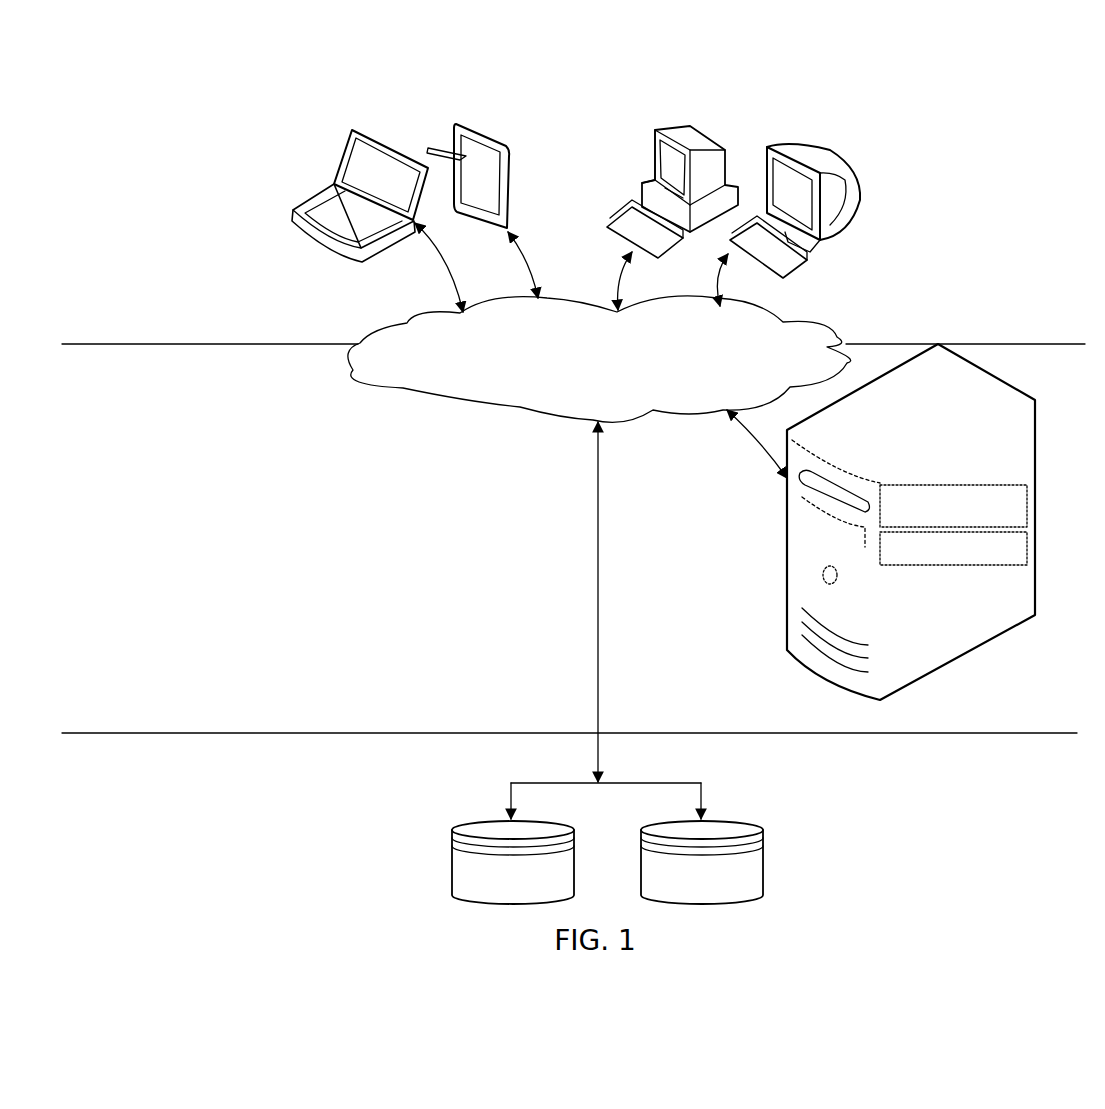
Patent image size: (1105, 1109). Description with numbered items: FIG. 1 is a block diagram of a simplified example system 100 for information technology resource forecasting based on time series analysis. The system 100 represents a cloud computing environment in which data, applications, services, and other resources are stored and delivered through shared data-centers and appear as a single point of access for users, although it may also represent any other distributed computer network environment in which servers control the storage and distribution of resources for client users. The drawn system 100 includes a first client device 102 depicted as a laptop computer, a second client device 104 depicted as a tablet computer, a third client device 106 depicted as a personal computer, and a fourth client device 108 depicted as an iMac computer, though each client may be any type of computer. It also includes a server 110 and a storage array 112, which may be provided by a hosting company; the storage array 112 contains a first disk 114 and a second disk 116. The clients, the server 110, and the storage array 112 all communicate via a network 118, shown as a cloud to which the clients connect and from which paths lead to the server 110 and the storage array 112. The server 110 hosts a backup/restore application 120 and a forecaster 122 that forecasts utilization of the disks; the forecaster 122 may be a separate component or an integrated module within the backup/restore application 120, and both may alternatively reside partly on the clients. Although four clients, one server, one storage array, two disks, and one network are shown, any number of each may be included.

The system 100 is at (586, 98).
The first client device 102 is at (355, 130).
The second client device 104 is at (470, 118).
The third client device 106 is at (655, 130).
The fourth client device 108 is at (778, 130).
The server 110 is at (787, 612).
The storage array 112 is at (737, 836).
The first disk 114 is at (464, 826).
The second disk 116 is at (652, 830).
The network 118 is at (599, 359).
The backup/restore application 120 is at (953, 506).
The forecaster 122 is at (953, 548).